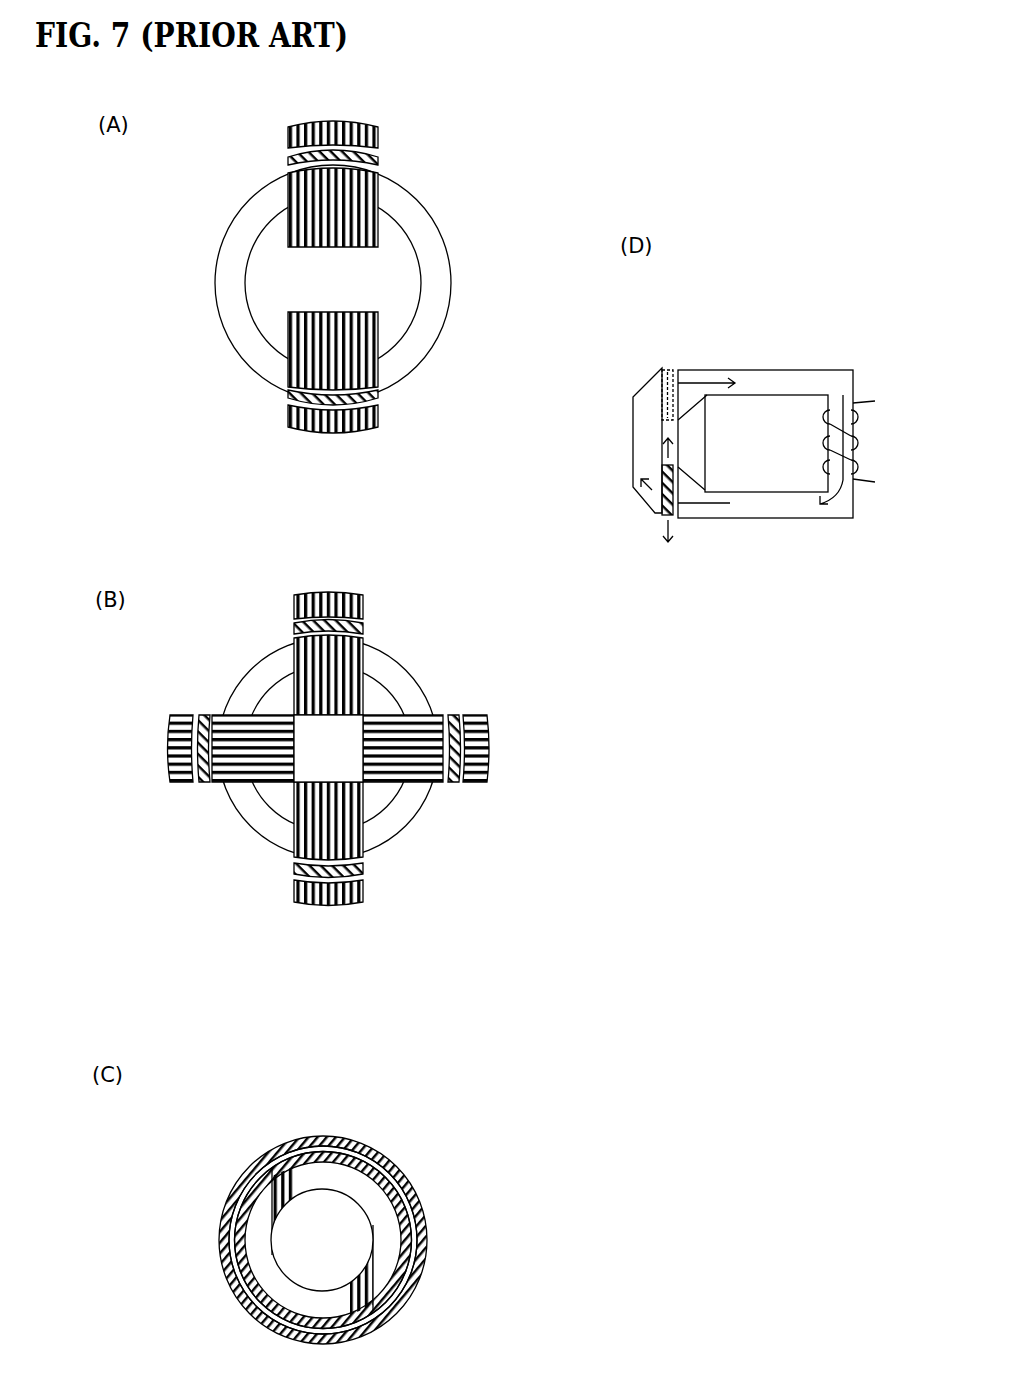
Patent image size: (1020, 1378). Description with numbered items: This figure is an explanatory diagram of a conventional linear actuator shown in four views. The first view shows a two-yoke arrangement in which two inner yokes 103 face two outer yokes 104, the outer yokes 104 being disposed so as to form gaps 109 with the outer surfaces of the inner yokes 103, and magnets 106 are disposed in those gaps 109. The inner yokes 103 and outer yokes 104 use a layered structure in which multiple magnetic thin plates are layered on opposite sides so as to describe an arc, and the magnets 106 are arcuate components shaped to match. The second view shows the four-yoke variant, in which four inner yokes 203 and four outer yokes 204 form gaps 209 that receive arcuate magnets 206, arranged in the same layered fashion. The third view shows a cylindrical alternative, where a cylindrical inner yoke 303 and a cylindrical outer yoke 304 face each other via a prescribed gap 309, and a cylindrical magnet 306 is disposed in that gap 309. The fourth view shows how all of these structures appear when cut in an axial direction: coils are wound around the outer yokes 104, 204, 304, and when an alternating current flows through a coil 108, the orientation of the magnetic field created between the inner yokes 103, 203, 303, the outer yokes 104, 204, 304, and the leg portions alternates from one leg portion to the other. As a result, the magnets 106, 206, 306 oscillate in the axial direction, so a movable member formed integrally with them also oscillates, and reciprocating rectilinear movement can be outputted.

The inner yoke 103 is at (366, 210).
The outer yoke 104 is at (352, 128).
The magnet 106 is at (378, 160).
The coil 108 is at (858, 432).
The gap 109 is at (284, 160).
The inner yoke 203 is at (360, 683).
The outer yoke 204 is at (352, 597).
The magnet 206 is at (363, 627).
The gap 209 is at (288, 621).
The cylindrical inner yoke 303 is at (372, 1200).
The cylindrical outer yoke 304 is at (313, 1137).
The cylindrical magnet 306 is at (410, 1263).
The gap 309 is at (420, 1218).